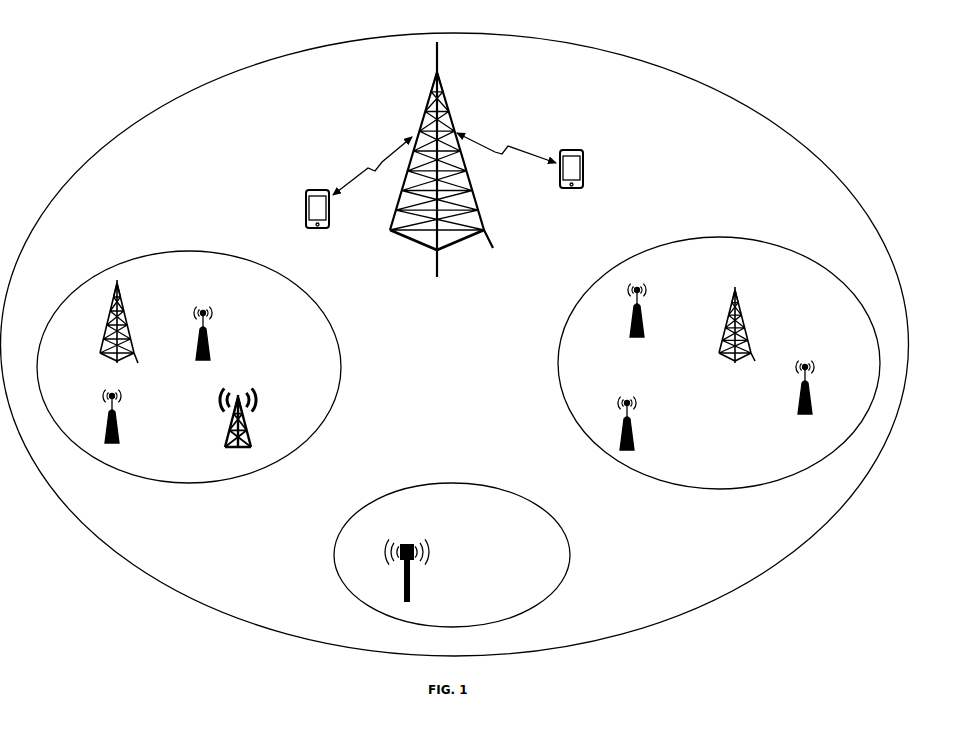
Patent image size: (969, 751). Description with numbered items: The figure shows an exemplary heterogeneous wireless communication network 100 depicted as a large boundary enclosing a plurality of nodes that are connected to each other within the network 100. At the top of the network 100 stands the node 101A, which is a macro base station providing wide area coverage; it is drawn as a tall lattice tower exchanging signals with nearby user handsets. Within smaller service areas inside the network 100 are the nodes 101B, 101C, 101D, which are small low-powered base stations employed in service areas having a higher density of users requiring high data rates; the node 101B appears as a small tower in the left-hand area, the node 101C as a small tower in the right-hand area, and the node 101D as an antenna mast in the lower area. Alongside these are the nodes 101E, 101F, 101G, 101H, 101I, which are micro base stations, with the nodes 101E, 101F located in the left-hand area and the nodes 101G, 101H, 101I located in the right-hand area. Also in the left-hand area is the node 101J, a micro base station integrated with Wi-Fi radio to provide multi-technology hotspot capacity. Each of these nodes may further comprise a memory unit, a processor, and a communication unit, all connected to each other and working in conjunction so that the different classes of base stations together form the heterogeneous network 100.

The heterogeneous wireless communication network 100 is at (763, 112).
The macro base station node 101A is at (445, 97).
The small low-powered base station node 101B is at (122, 317).
The small low-powered base station node 101C is at (741, 317).
The small low-powered base station node 101D is at (412, 592).
The micro base station node 101E is at (211, 345).
The micro base station node 101F is at (118, 430).
The micro base station node 101G is at (643, 318).
The micro base station node 101H is at (633, 430).
The micro base station node 101I is at (811, 393).
The micro base station with integrated Wi-Fi radio 101J is at (251, 430).